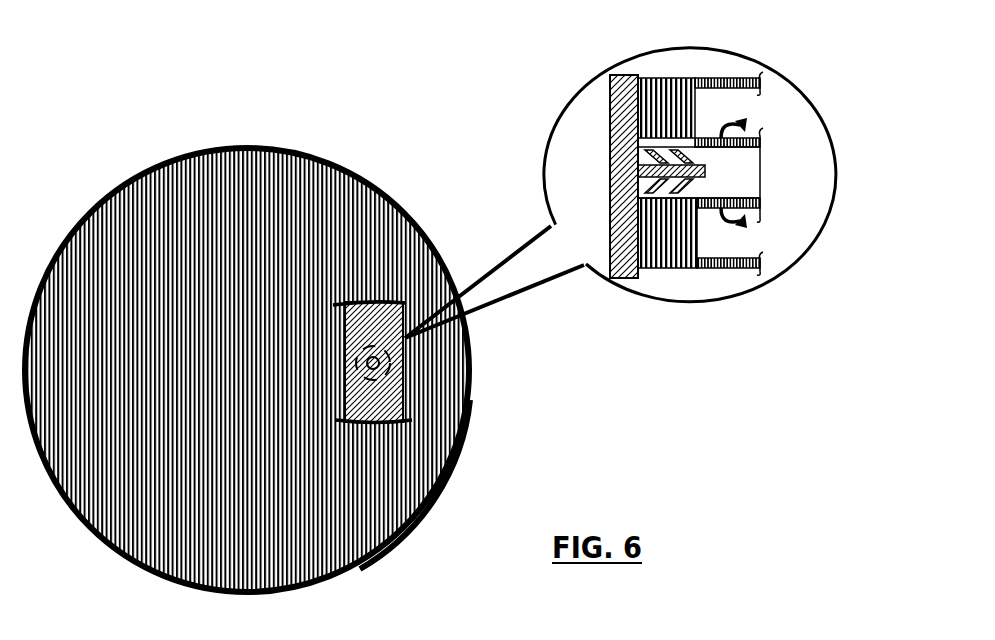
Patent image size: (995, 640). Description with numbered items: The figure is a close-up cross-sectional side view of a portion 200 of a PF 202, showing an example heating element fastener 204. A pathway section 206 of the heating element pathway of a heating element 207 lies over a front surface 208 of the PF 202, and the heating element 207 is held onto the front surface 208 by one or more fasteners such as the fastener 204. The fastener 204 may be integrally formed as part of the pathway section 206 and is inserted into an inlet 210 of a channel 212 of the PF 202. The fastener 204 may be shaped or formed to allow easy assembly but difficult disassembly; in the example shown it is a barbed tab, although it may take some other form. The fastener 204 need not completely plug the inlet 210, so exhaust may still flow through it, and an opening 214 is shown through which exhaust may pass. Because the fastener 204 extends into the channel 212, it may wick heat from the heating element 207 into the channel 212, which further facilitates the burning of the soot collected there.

The portion 200 is at (795, 80).
The PF 202 is at (231, 145).
The heating element fastener 204 is at (667, 77).
The pathway section 206 is at (406, 306).
The heating element 207 is at (610, 88).
The front surface 208 is at (447, 476).
The inlet 210 is at (610, 147).
The channel 212 is at (730, 170).
The opening 214 is at (392, 363).